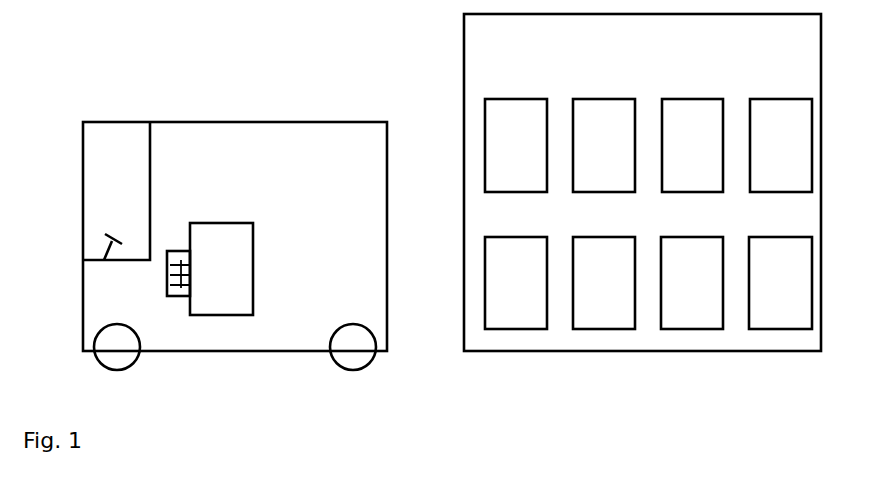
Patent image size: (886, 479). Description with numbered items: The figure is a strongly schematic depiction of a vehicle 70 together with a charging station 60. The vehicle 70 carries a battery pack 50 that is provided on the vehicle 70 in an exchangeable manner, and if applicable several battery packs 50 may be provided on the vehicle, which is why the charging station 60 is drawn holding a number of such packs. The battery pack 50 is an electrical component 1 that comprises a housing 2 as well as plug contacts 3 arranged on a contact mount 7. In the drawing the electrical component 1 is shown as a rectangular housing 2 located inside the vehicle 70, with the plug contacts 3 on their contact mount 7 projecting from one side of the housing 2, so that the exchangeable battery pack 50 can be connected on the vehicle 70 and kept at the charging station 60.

The vehicle 70 is at (82, 103).
The electrical component 1 is at (217, 213).
The battery pack 50 is at (253, 227).
The housing 2 is at (253, 282).
The plug contacts 3 is at (165, 274).
The contact mount 7 is at (183, 277).
The charging station 60 is at (473, 36).